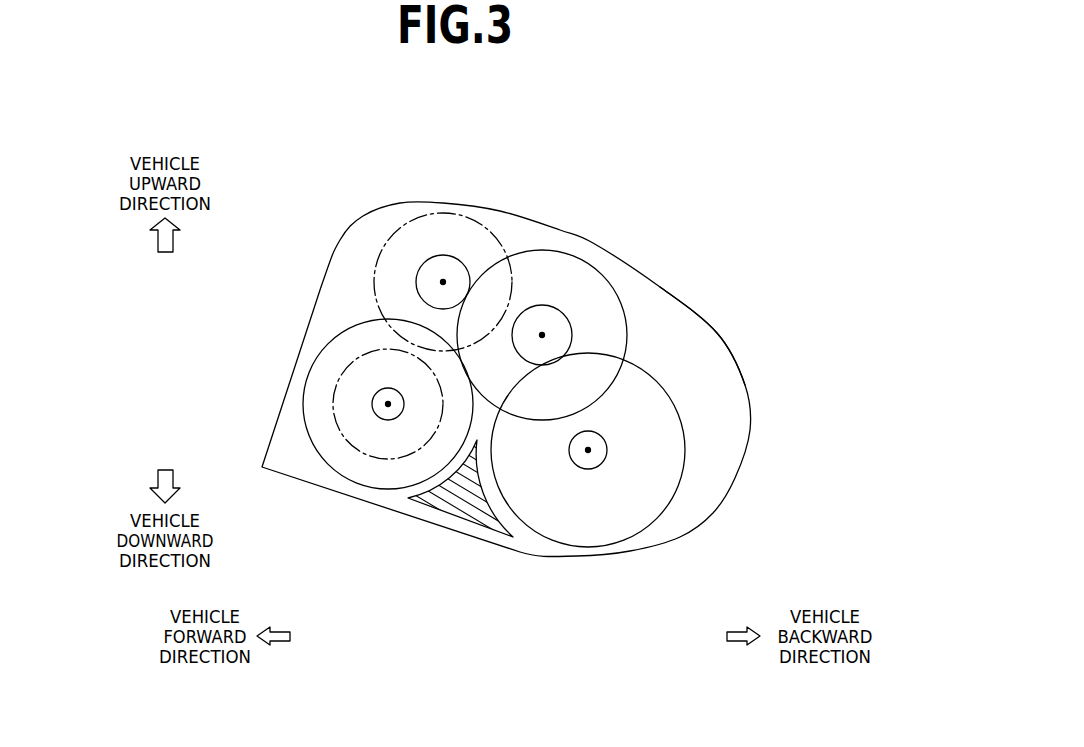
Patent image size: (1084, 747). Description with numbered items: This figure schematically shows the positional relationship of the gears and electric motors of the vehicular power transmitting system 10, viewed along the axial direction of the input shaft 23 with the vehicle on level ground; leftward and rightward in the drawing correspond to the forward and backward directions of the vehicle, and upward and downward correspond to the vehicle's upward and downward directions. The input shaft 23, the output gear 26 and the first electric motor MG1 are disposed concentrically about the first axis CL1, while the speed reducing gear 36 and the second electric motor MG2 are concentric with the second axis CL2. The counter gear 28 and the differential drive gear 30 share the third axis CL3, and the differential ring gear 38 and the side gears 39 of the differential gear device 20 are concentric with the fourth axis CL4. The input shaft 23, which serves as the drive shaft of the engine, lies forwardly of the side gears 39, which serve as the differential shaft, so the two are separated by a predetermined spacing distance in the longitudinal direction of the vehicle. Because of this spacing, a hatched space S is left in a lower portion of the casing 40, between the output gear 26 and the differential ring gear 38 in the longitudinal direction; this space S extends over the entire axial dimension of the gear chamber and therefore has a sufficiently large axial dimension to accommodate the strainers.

The vehicular power transmitting system 10 is at (742, 216).
The differential gear device 20 is at (678, 492).
The input shaft 23 is at (392, 419).
The output gear 26 is at (308, 366).
The counter gear 28 is at (619, 292).
The differential drive gear 30 is at (573, 330).
The speed reducing gear 36 is at (417, 290).
The differential ring gear 38 is at (635, 455).
The side gears 39 is at (605, 463).
The casing 40 is at (718, 334).
The first electric motor MG1 is at (360, 458).
The second electric motor MG2 is at (380, 251).
The first axis CL1 is at (388, 404).
The second axis CL2 is at (443, 282).
The third axis CL3 is at (542, 335).
The fourth axis CL4 is at (588, 450).
The space S is at (473, 497).